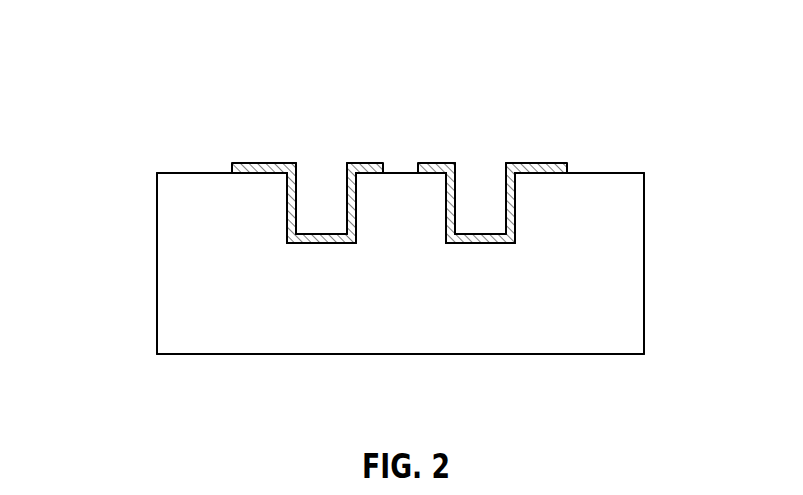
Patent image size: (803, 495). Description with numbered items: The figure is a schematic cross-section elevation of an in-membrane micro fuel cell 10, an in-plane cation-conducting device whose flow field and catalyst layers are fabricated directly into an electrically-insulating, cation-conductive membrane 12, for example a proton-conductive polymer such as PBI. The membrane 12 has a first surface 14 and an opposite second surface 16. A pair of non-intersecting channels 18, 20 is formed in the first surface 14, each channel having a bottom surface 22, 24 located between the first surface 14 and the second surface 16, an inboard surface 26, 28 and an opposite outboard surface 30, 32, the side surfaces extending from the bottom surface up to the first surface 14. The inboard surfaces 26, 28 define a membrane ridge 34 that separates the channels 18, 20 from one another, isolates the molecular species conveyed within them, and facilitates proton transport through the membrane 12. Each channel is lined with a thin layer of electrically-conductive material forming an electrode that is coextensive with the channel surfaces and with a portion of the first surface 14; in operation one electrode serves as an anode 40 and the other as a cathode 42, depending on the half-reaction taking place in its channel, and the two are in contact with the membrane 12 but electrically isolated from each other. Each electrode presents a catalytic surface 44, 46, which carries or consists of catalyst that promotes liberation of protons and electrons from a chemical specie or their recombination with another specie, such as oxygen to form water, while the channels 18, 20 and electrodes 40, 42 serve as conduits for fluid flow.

The in-membrane micro fuel cell 10 is at (110, 67).
The cation-conductive membrane 12 is at (644, 235).
The first surface 14 is at (215, 173).
The second surface 16 is at (182, 354).
The channel 18 is at (300, 207).
The channel 20 is at (501, 206).
The bottom surface 22 is at (317, 243).
The bottom surface 24 is at (482, 243).
The inboard surface 26 is at (357, 208).
The inboard surface 28 is at (445, 198).
The outboard surface 30 is at (285, 227).
The outboard surface 32 is at (515, 213).
The membrane ridge 34 is at (400, 173).
The anode 40 is at (300, 179).
The cathode 42 is at (502, 187).
The catalytic surface 44 is at (313, 232).
The catalytic surface 46 is at (480, 233).